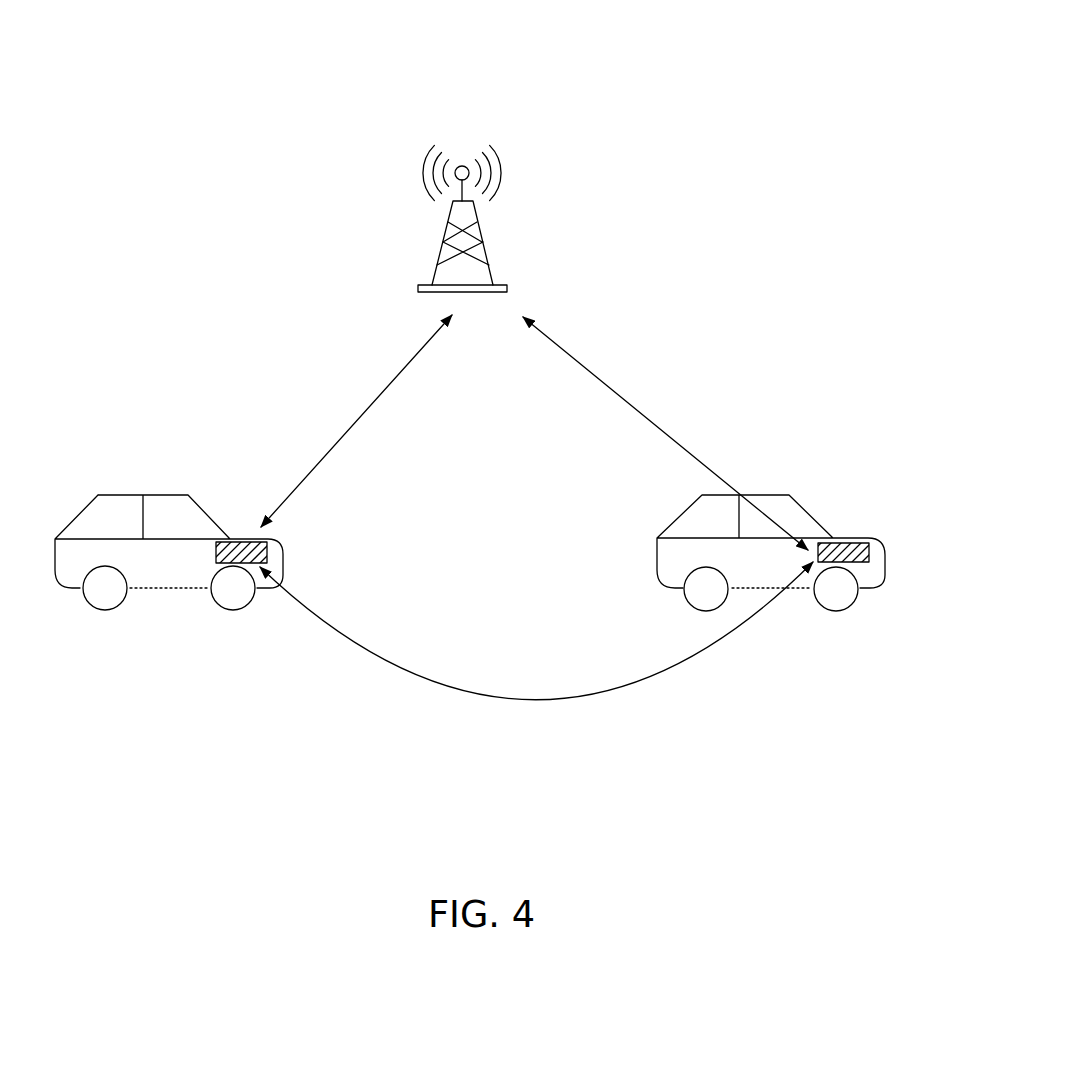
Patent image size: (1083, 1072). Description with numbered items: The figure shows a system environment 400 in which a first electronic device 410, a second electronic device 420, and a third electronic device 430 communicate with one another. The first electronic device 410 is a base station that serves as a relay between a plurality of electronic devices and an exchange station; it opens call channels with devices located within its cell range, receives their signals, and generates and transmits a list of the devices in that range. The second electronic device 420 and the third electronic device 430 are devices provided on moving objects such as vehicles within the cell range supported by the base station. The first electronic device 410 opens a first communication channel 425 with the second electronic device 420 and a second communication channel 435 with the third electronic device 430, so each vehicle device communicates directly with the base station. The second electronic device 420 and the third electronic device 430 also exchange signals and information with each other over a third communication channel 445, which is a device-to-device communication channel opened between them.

The system environment 400 is at (764, 34).
The first electronic device 410 is at (481, 226).
The second electronic device 420 is at (267, 552).
The third electronic device 430 is at (875, 538).
The first communication channel 425 is at (357, 422).
The second communication channel 435 is at (668, 433).
The third communication channel 445 is at (537, 700).